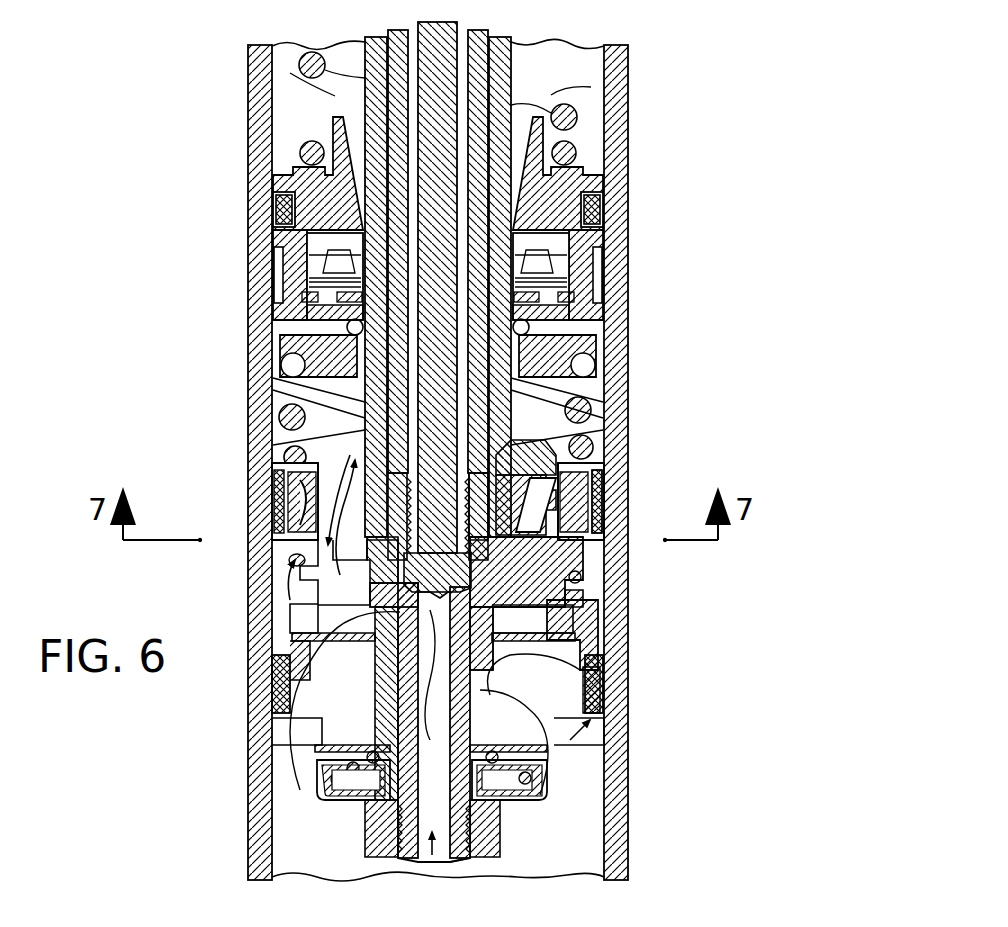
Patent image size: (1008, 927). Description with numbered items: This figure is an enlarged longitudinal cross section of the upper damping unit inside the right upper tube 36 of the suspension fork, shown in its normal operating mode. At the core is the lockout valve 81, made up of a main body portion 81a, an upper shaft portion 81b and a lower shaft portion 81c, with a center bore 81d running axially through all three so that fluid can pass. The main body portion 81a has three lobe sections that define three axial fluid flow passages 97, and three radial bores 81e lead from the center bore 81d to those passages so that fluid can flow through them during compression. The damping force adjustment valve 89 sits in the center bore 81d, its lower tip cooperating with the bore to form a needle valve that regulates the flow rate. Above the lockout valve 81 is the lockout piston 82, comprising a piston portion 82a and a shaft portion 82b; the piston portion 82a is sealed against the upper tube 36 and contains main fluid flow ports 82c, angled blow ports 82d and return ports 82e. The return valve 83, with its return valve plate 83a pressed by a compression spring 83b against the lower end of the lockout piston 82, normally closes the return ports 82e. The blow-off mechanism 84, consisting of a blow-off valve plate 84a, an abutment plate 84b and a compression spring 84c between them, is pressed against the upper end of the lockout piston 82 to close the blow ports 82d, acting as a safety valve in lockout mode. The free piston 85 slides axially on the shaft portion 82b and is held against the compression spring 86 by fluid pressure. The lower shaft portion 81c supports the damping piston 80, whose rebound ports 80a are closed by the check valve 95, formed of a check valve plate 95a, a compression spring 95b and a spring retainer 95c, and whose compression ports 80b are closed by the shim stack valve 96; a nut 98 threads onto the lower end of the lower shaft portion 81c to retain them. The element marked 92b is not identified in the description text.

The right upper tube 36 is at (630, 204).
The damping force adjustment valve 89 is at (440, 34).
The inner tube 92b is at (402, 39).
The shaft portion 82b is at (490, 68).
The compression spring 86 is at (575, 105).
The free piston 85 is at (606, 154).
The blow-off mechanism 84 is at (145, 325).
The blow-off valve plate 84a is at (280, 412).
The abutment plate 84b is at (280, 340).
The compression spring 84c is at (275, 418).
The lockout piston 82 is at (612, 449).
The piston portion 82a is at (547, 442).
The main fluid flow ports 82c is at (272, 492).
The blow ports 82d is at (602, 498).
The return ports 82e is at (288, 560).
The lockout valve 81 is at (586, 588).
The main body portion 81a is at (522, 596).
The upper shaft portion 81b is at (495, 465).
The lower shaft portion 81c is at (457, 865).
The center bore 81d is at (427, 862).
The radial bores 81e is at (400, 632).
The return valve 83 is at (775, 543).
The return valve plate 83a is at (585, 555).
The compression spring 83b is at (585, 578).
The damping piston 80 is at (606, 760).
The rebound ports 80a is at (285, 687).
The compression ports 80b is at (603, 717).
The check valve 95 is at (175, 742).
The check valve plate 95a is at (320, 747).
The compression spring 95b is at (355, 767).
The spring retainer 95c is at (335, 829).
The shim stack valve 96 is at (576, 633).
The axial fluid flow passages 97 is at (280, 590).
The nut 98 is at (502, 835).